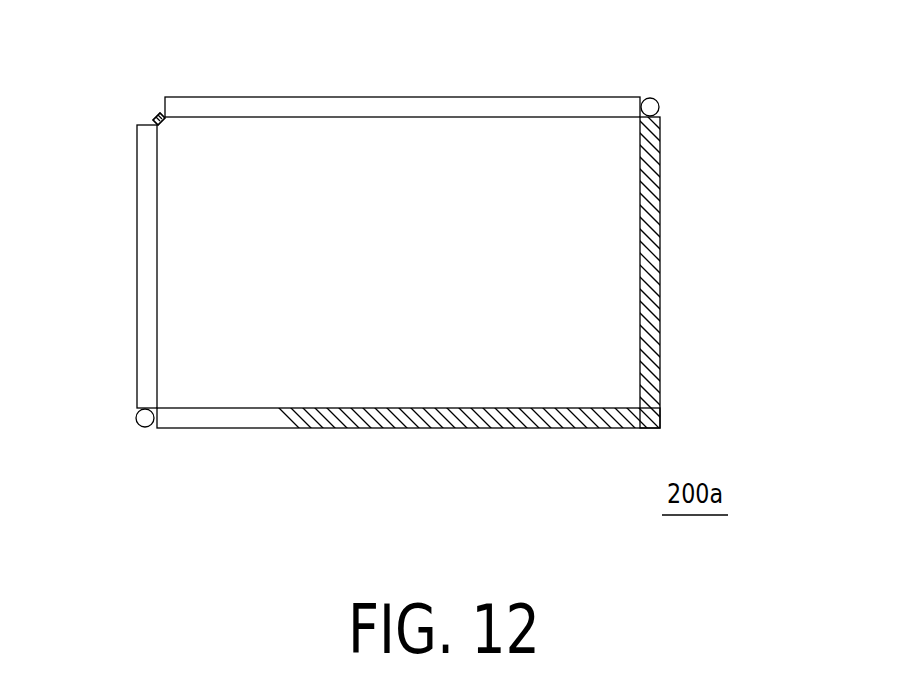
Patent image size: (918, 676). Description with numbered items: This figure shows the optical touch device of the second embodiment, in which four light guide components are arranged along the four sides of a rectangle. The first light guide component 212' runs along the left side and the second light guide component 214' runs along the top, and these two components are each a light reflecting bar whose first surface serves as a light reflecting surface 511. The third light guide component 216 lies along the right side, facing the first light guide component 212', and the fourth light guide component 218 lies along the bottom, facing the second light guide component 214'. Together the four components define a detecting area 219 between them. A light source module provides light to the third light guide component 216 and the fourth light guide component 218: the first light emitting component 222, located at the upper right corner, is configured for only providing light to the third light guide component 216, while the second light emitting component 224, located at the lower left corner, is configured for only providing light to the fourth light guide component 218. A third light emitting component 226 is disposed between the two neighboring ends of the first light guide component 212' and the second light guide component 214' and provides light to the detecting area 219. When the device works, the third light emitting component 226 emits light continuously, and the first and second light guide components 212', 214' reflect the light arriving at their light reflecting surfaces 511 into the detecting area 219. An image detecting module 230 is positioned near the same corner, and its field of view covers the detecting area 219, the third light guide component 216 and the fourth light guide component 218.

The first light guide component 212' is at (103, 266).
The second light guide component 214' is at (402, 66).
The third light guide component 216 is at (655, 268).
The fourth light guide component 218 is at (472, 428).
The detecting area 219 is at (617, 345).
The first light emitting component 222 is at (652, 98).
The second light emitting component 224 is at (144, 428).
The third light emitting component 226 is at (163, 112).
The image detecting module 230 is at (154, 117).
The light reflecting surface 511 is at (603, 120).